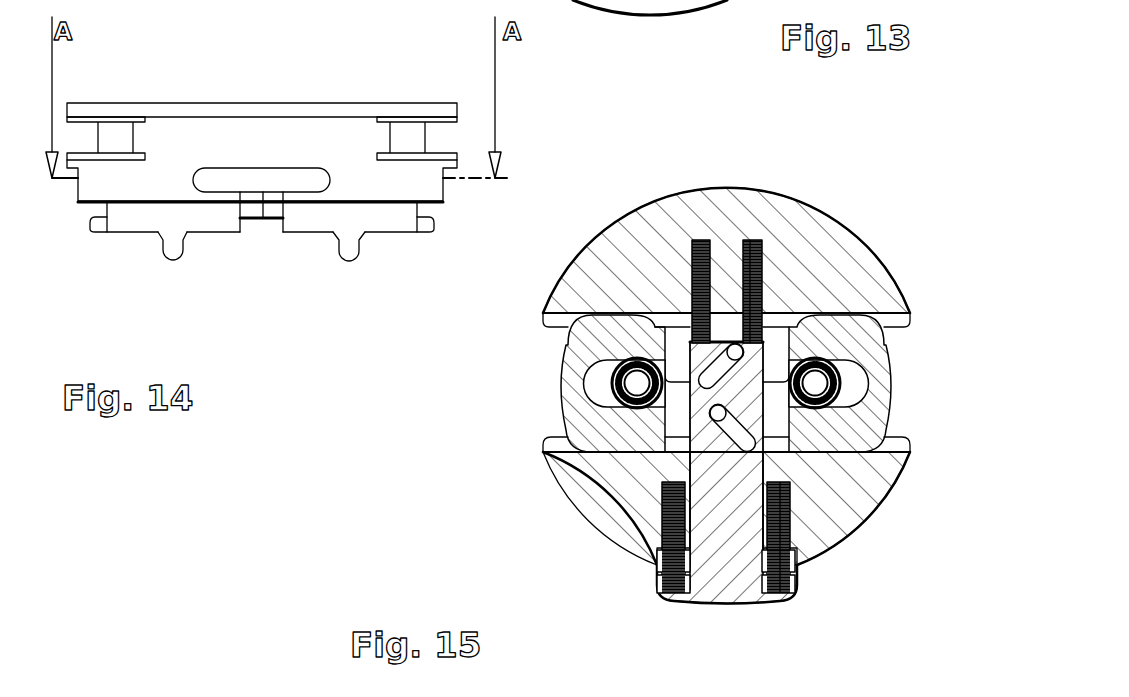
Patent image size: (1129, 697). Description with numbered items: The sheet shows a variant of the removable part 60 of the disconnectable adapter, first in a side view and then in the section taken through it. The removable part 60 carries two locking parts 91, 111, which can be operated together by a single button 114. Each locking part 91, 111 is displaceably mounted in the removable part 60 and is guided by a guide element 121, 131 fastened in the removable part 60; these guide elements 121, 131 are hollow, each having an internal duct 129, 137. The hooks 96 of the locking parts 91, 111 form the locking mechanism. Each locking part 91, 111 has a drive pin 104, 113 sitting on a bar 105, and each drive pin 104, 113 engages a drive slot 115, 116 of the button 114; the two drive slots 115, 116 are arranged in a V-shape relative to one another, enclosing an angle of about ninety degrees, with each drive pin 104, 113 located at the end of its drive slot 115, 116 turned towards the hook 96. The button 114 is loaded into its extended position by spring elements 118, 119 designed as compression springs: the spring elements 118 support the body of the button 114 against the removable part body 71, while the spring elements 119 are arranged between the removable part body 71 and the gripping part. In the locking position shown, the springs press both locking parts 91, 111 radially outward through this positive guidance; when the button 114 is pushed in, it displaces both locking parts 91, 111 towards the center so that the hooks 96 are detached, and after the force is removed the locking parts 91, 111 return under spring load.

In FIG. 14, the removable part 60 is at (262, 175).
In FIG. 15, the removable part 60 is at (753, 176).
In FIG. 14, the removable part body 71 is at (163, 137).
In FIG. 15, the removable part body 71 is at (599, 476).
In FIG. 14, the locking part 91 is at (132, 222).
In FIG. 15, the locking part 91 is at (578, 382).
In FIG. 14, the hook 96 is at (92, 222).
In FIG. 15, the drive pin 104 is at (632, 402).
In FIG. 15, the bar 105 is at (678, 425).
In FIG. 14, the locking part 111 is at (398, 222).
In FIG. 15, the locking part 111 is at (857, 428).
In FIG. 15, the drive pin 113 is at (735, 352).
In FIG. 14, the button 114 is at (300, 180).
In FIG. 15, the drive slot 115 is at (718, 413).
In FIG. 15, the drive slot 116 is at (703, 372).
In FIG. 15, the spring element 118 is at (752, 268).
In FIG. 15, the spring element 119 is at (662, 492).
In FIG. 14, the guide element 121 is at (172, 252).
In FIG. 15, the guide element 121 is at (557, 353).
In FIG. 15, the internal duct 129 is at (628, 355).
In FIG. 14, the guide element 131 is at (351, 252).
In FIG. 15, the guide element 131 is at (811, 407).
In FIG. 15, the internal duct 137 is at (821, 357).